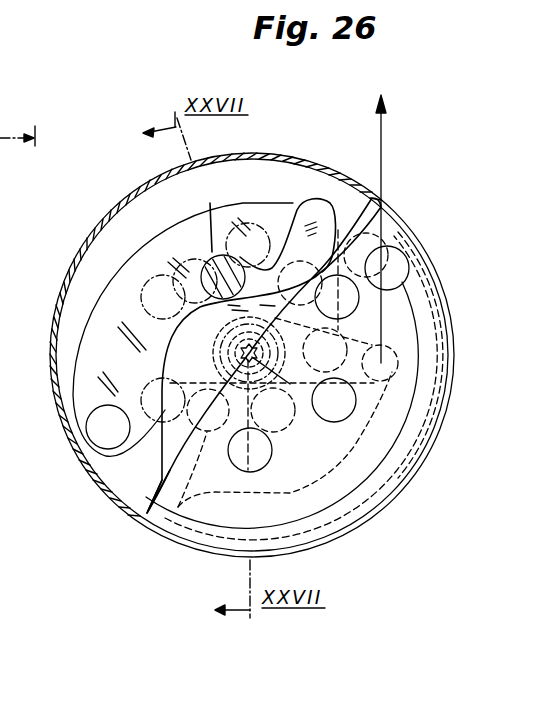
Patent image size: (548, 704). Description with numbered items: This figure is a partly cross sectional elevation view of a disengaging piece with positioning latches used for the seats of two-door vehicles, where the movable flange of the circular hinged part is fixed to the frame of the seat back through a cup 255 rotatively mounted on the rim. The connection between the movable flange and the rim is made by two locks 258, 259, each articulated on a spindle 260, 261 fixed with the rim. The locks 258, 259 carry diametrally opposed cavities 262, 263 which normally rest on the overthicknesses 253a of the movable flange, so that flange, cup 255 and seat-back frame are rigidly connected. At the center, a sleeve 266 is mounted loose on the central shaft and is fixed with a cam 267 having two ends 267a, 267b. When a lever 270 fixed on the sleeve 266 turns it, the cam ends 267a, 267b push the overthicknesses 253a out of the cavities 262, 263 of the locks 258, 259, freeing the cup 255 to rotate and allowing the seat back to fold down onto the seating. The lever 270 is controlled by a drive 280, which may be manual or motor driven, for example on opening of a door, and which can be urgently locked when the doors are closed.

The overthicknesses 253a is at (198, 253).
The cup 255 is at (152, 181).
The lock 258 is at (105, 311).
The lock 259 is at (402, 340).
The spindle 260 is at (99, 427).
The spindle 261 is at (392, 269).
The cavity 262 is at (217, 257).
The cavity 263 is at (247, 458).
The sleeve 266 is at (286, 420).
The cam 267 is at (374, 195).
The cam end 267a is at (322, 199).
The cam end 267b is at (146, 508).
The lever 270 is at (385, 367).
The drive 280 is at (386, 123).